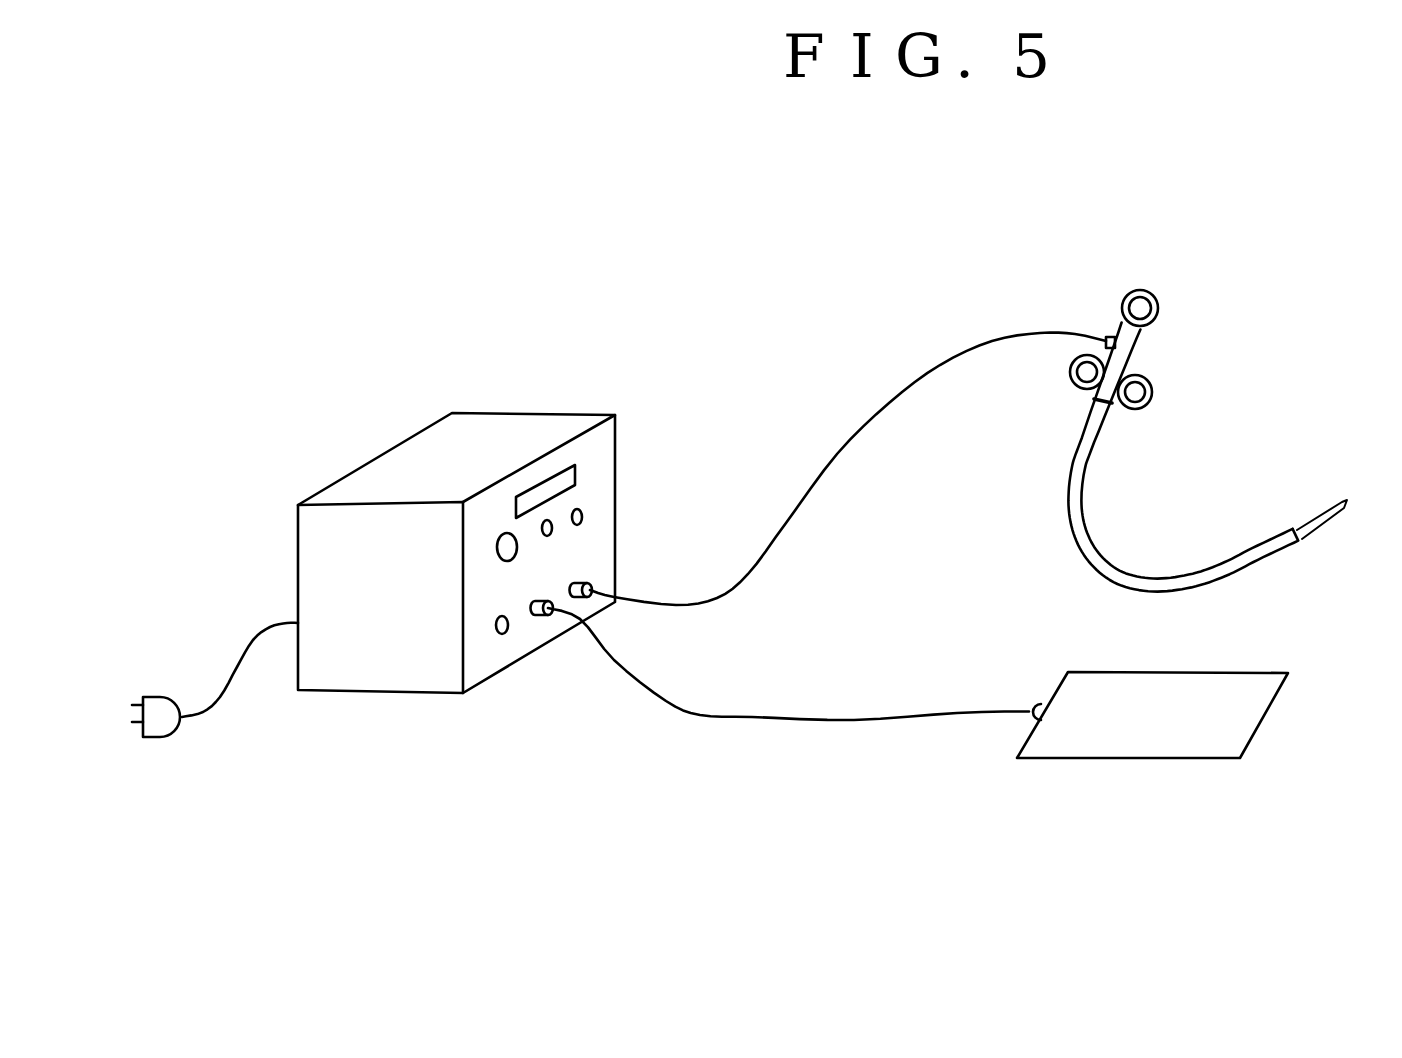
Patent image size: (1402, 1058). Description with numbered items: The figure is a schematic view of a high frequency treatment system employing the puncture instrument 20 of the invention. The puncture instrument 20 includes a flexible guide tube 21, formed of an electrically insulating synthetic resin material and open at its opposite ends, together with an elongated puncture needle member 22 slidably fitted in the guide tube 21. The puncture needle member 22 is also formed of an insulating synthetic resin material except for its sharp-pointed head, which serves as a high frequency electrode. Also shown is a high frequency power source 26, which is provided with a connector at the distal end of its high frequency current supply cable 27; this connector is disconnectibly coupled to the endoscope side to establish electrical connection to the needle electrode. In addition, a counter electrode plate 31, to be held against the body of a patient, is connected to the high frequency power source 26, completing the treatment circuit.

The puncture instrument 20 is at (1183, 446).
The flexible guide tube 21 is at (1073, 522).
The puncture needle member 22 is at (1325, 522).
The high frequency power source 26 is at (495, 412).
The high frequency current supply cable 27 is at (882, 420).
The counter electrode plate 31 is at (1112, 758).